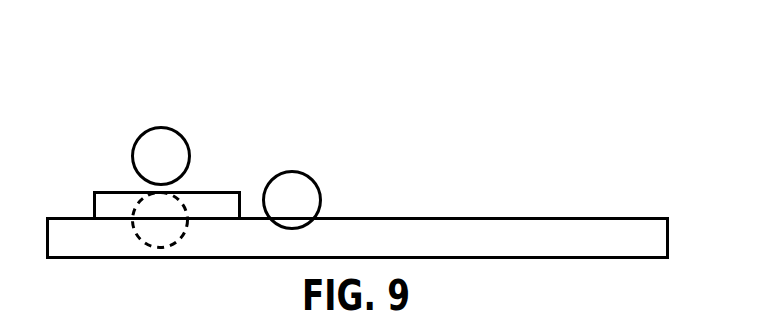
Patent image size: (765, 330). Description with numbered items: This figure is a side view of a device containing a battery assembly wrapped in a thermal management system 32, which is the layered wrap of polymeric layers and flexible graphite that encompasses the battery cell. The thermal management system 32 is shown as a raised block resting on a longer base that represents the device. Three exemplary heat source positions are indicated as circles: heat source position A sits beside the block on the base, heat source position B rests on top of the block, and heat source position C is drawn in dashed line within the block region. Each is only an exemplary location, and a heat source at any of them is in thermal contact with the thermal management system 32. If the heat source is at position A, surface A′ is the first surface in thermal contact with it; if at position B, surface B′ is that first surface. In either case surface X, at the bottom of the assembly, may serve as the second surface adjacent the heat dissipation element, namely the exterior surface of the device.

The thermal management system 32 is at (210, 191).
The heat source position A is at (292, 200).
The heat source position B is at (161, 156).
The heat source position C is at (160, 220).
The surface A′ is at (242, 216).
The surface B′ is at (112, 190).
The surface X is at (113, 219).